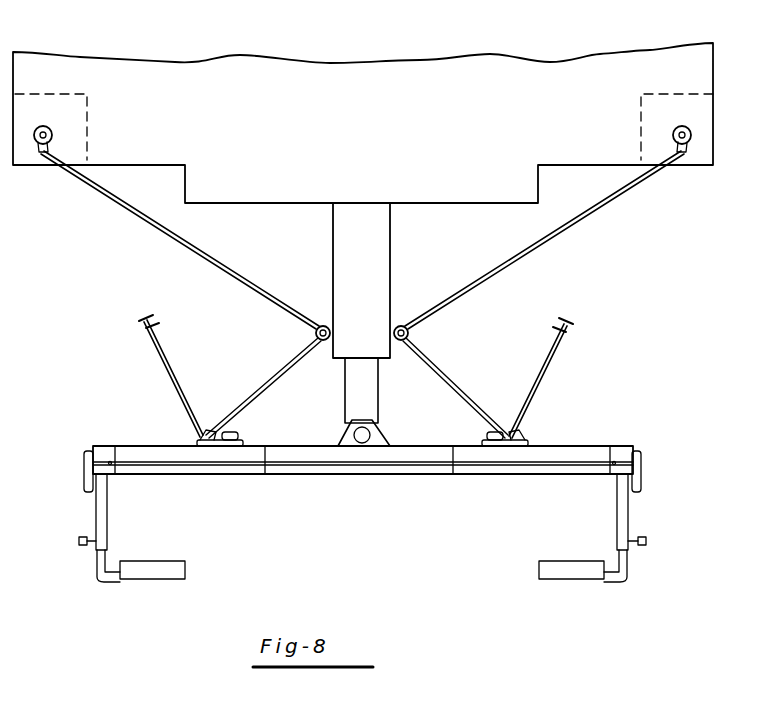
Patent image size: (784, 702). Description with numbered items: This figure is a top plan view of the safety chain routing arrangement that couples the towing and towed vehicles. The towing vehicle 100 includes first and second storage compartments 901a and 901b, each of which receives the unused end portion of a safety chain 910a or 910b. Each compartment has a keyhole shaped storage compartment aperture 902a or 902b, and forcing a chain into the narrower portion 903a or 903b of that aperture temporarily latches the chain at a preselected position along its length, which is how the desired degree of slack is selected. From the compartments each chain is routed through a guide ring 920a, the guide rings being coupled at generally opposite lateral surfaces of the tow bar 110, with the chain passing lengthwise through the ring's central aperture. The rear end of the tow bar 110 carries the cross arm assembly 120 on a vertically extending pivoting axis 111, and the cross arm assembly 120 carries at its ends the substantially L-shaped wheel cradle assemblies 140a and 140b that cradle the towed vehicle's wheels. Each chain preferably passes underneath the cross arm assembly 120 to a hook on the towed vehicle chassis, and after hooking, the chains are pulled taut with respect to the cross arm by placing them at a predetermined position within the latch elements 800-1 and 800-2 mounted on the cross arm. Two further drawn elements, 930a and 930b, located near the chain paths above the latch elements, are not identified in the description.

The towing vehicle 100 is at (357, 127).
The tow bar 110 is at (402, 247).
The vertically extending pivoting axis 111 is at (365, 450).
The cross arm assembly 120 is at (300, 475).
The wheel cradle assembly 140a is at (145, 552).
The wheel cradle assembly 140b is at (580, 550).
The latch element 800-1 is at (243, 442).
The latch element 800-2 is at (481, 442).
The storage compartment 901a is at (52, 92).
The storage compartment 901b is at (660, 92).
The storage compartment aperture 902a is at (55, 131).
The storage compartment aperture 902b is at (670, 133).
The narrower portion 903a is at (50, 151).
The narrower portion 903b is at (676, 151).
The safety chain 910a is at (115, 205).
The safety chain 910b is at (600, 204).
The guide ring 920a is at (313, 325).
The left adjustable rod 930a is at (141, 328).
The right adjustable rod 930b is at (570, 325).